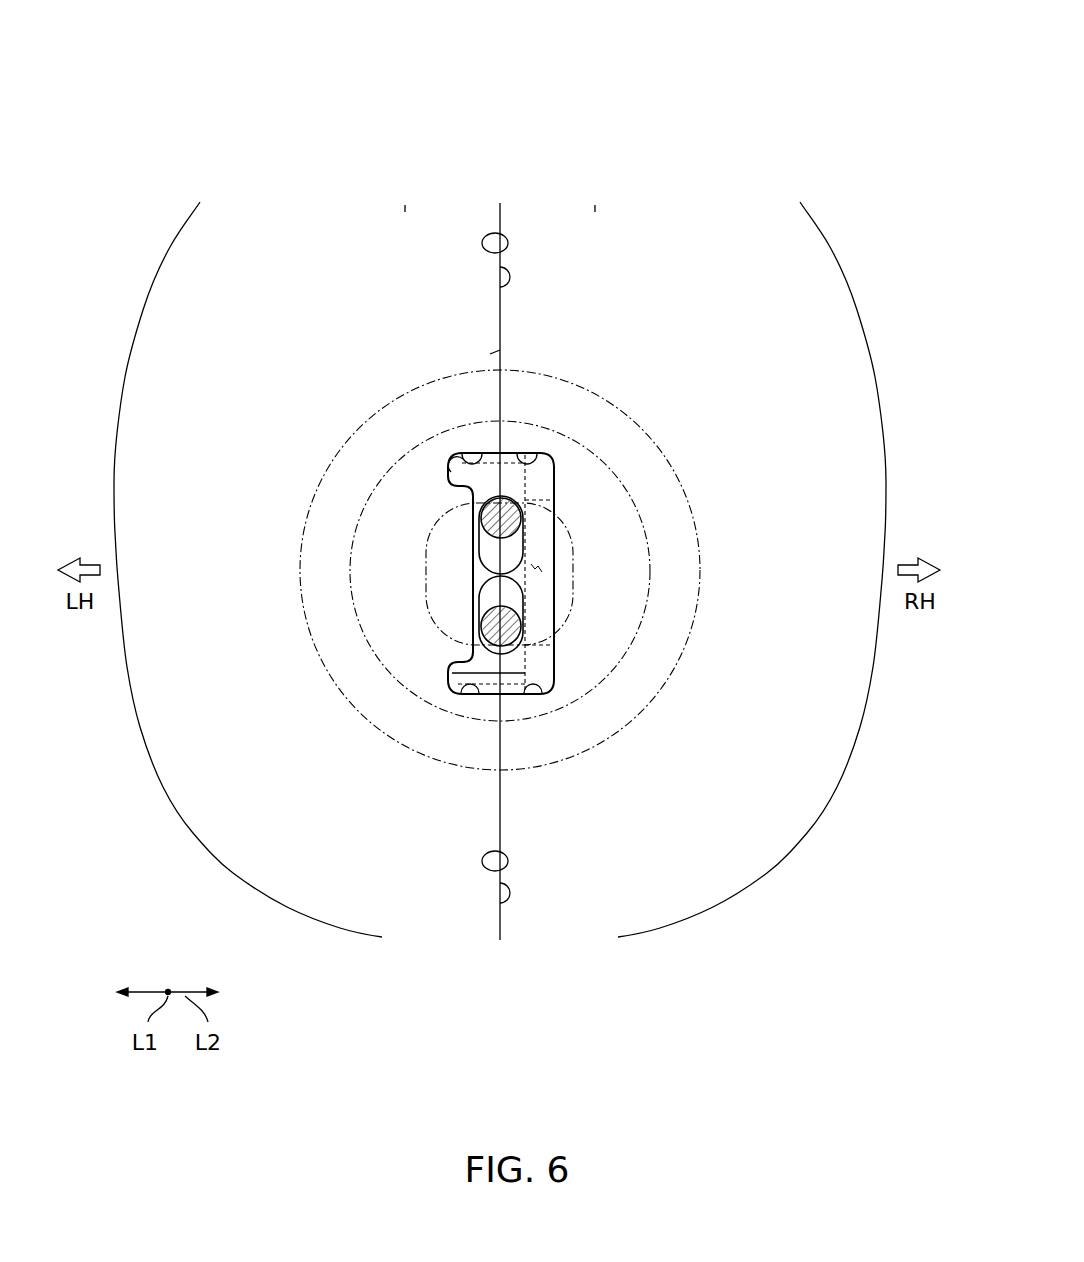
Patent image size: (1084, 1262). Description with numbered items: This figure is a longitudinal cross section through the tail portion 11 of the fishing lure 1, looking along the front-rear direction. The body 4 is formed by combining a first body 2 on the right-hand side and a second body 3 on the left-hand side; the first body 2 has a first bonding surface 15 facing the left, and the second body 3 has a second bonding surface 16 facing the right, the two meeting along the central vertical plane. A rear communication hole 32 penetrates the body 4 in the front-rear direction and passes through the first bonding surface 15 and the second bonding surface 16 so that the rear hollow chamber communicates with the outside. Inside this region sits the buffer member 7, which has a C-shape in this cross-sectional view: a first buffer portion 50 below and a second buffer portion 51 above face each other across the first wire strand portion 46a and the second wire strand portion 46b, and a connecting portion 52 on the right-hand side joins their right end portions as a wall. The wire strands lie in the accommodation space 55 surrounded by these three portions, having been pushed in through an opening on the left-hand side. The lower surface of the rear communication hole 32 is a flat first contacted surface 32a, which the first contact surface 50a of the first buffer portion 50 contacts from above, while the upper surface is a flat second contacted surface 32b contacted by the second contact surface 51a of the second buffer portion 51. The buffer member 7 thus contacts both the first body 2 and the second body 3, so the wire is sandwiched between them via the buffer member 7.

The lure 1 is at (786, 101).
The first body 2 is at (595, 213).
The second body 3 is at (405, 213).
The body 4 is at (390, 105).
The buffer member 7 is at (555, 475).
The tail portion 11 is at (502, 350).
The first bonding surface 15 is at (506, 250).
The second bonding surface 16 is at (500, 281).
The rear communication hole 32 is at (548, 570).
The first contacted surface 32a is at (455, 695).
The second contacted surface 32b is at (450, 470).
The first wire strand portion 46a is at (513, 630).
The second wire strand portion 46b is at (520, 513).
The first buffer portion 50 is at (496, 676).
The first contact surface 50a is at (505, 694).
The second buffer portion 51 is at (500, 470).
The second contact surface 51a is at (486, 452).
The connecting portion 52 is at (542, 590).
The accommodation space 55 is at (480, 572).